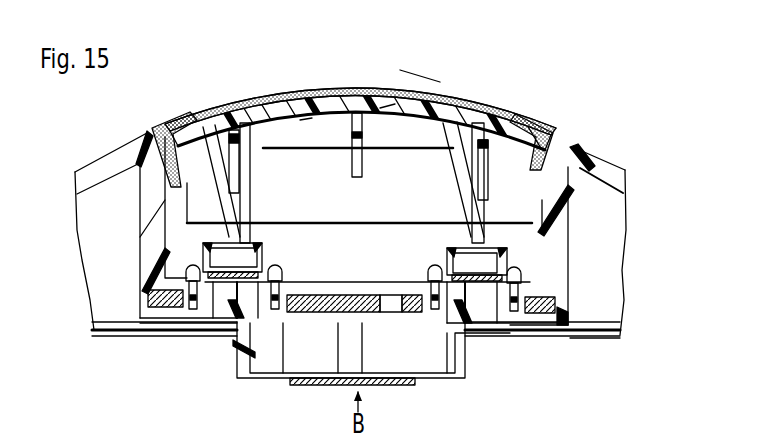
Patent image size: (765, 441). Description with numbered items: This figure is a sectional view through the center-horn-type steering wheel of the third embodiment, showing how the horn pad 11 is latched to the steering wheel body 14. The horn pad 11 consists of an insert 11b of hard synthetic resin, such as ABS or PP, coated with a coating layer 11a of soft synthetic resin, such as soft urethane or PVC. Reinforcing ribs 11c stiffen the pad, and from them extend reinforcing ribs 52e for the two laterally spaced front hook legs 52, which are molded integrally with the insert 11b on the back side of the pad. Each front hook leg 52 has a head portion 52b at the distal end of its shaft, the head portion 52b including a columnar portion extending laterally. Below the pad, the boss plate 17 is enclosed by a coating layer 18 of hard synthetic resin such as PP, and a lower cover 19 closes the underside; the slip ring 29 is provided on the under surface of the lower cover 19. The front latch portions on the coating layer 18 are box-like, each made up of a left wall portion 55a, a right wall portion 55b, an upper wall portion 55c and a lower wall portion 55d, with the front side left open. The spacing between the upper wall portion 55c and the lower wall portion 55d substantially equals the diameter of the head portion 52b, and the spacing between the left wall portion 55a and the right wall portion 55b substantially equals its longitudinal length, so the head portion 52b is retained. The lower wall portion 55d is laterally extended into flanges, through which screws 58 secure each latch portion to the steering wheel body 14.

The horn pad 11 is at (470, 46).
The coating layer 11a is at (440, 98).
The insert 11b is at (387, 107).
The reinforcing ribs 11c is at (306, 128).
The steering wheel body 14 is at (586, 316).
The boss plate 17 is at (315, 302).
The coating layer 18 is at (543, 318).
The lower cover 19 is at (591, 338).
The slip ring 29 is at (312, 387).
The front hook leg 52 is at (255, 192).
The head portion 52b is at (262, 246).
The reinforcing ribs 52e is at (198, 140).
The left wall portion 55a is at (213, 250).
The right wall portion 55b is at (568, 208).
The upper wall portion 55c is at (185, 128).
The lower wall portion 55d is at (228, 300).
The screws 58 is at (517, 290).